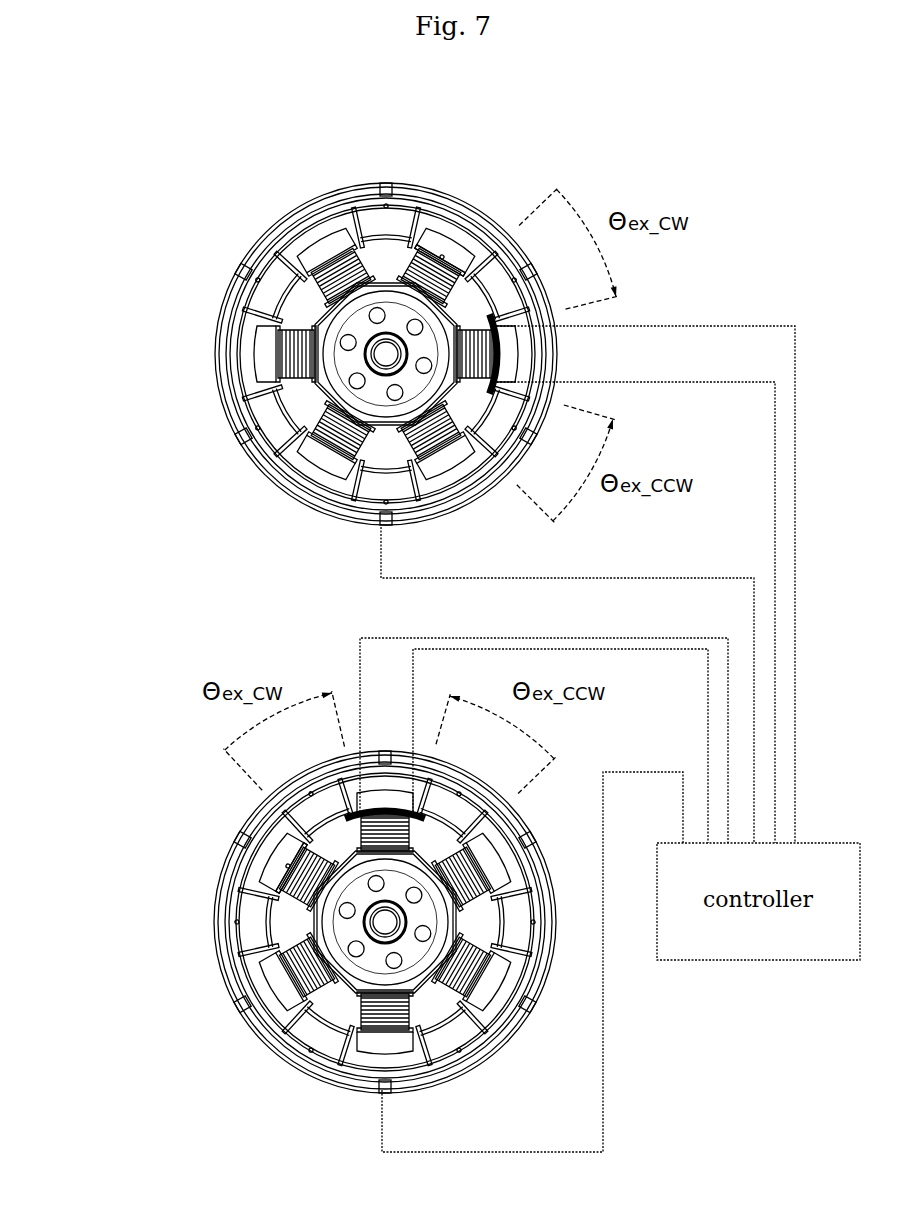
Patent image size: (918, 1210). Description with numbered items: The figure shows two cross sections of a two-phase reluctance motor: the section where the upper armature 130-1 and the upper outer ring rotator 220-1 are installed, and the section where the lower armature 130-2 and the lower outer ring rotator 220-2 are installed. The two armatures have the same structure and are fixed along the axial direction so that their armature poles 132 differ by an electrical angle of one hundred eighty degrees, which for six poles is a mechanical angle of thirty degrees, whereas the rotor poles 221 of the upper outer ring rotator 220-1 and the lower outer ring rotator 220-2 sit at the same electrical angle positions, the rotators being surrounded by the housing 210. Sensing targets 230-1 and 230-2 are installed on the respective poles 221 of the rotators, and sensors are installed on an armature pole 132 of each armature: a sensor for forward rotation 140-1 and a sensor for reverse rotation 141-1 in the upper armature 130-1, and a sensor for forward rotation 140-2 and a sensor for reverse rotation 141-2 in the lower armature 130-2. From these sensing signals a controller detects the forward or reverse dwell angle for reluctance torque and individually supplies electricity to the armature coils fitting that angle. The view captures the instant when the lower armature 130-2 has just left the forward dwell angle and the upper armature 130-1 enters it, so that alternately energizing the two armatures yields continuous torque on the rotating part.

The upper armature 130-1 is at (313, 317).
The lower armature 130-2 is at (273, 970).
The armature pole 132 is at (443, 257).
The sensor for forward rotation 140-1 is at (560, 333).
The sensor for reverse rotation 141-1 is at (555, 388).
The sensor for forward rotation 140-2 is at (347, 803).
The sensor for reverse rotation 141-2 is at (435, 803).
The housing 210 is at (247, 323).
The upper outer ring rotator 220-1 is at (222, 322).
The lower outer ring rotator 220-2 is at (247, 932).
The pole of the rotator 221 is at (539, 233).
The sensing target 230-1 is at (475, 302).
The sensing target 230-2 is at (287, 870).